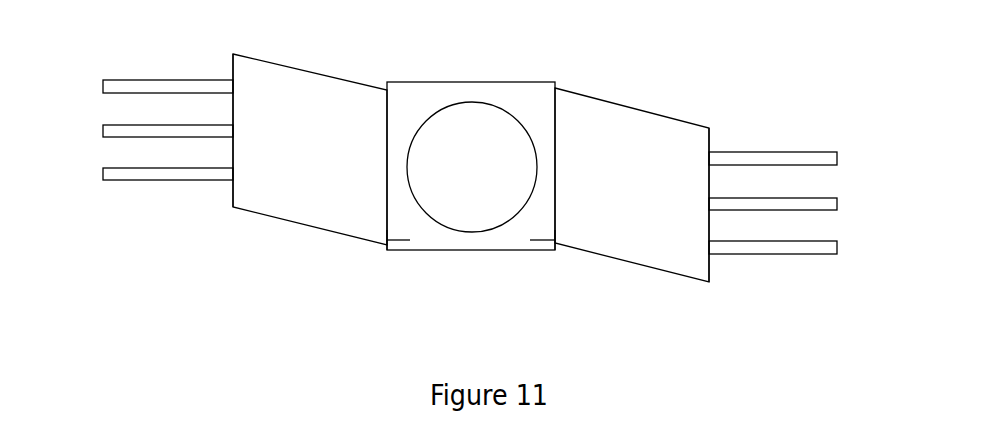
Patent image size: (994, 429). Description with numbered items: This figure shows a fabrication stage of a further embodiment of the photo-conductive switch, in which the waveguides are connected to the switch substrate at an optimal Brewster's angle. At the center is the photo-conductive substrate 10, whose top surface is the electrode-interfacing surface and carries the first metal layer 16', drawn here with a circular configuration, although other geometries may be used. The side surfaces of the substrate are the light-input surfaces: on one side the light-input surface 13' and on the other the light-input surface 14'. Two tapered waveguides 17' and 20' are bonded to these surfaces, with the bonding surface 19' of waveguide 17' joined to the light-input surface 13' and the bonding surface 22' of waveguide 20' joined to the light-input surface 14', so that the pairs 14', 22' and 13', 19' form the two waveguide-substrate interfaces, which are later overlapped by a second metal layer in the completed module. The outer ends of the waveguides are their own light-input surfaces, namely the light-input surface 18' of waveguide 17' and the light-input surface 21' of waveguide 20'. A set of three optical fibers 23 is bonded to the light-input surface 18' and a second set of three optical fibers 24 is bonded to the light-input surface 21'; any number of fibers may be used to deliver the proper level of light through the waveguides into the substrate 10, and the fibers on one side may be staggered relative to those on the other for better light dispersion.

The photo-conductive substrate 10 is at (476, 76).
The light-input surface of substrate 13' is at (569, 261).
The light-input surface of substrate 14' is at (373, 258).
The first metal layer 16' is at (472, 167).
The waveguide 17' is at (632, 185).
The light-input surface of waveguide 18' is at (723, 221).
The bonding surface of waveguide 19' is at (538, 261).
The waveguide 20' is at (310, 149).
The light-input surface of waveguide 21' is at (218, 144).
The bonding surface of waveguide 22' is at (405, 262).
The set of optical fibers 23 is at (842, 145).
The set of optical fibers 24 is at (94, 77).